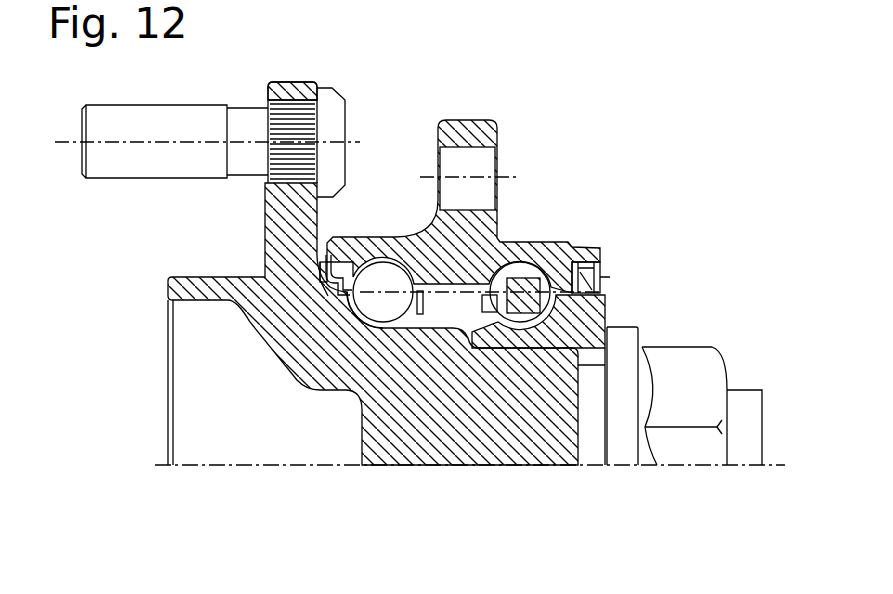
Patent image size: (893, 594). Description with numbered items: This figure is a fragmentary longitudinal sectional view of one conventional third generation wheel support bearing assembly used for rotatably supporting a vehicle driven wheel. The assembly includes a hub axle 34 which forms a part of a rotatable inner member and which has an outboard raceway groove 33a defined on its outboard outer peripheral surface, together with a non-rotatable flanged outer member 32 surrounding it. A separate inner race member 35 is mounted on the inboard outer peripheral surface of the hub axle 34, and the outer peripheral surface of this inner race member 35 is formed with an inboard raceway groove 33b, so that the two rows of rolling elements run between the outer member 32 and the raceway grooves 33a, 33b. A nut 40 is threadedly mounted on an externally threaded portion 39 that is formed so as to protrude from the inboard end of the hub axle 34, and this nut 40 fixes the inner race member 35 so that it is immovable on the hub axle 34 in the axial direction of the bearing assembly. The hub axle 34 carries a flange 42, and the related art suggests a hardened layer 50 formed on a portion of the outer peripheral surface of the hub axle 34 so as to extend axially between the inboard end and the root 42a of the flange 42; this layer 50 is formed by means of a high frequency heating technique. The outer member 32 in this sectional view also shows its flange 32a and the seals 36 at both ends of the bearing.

The flange 42 is at (297, 85).
The root of the flange 42a is at (280, 228).
The hub axle 34 is at (273, 327).
The flanged outer member 32 is at (543, 286).
The outer ring flange 32a is at (530, 241).
The seal 36 is at (382, 273).
The inner race member 35 is at (600, 313).
The nut 40 is at (702, 353).
The externally threaded portion 39 is at (777, 407).
The outboard raceway groove 33a is at (360, 327).
The inboard raceway groove 33b is at (538, 312).
The hardened layer 50 is at (388, 318).